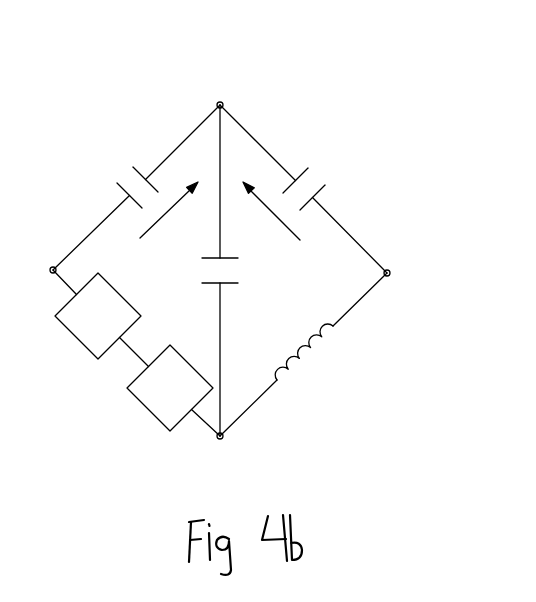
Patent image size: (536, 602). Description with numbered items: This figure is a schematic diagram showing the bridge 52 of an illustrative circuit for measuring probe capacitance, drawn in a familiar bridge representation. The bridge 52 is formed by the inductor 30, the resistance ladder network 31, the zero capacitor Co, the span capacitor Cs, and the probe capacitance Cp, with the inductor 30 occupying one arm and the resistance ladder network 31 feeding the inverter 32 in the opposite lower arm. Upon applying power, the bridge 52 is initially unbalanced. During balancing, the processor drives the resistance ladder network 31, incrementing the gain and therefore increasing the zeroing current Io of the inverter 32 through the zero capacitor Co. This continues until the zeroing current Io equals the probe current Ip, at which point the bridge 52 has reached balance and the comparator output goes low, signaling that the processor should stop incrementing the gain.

The bridge 52 is at (208, 42).
The inductor 30 is at (308, 358).
The R2R ladder 31 is at (148, 412).
The inverter 32 is at (75, 340).